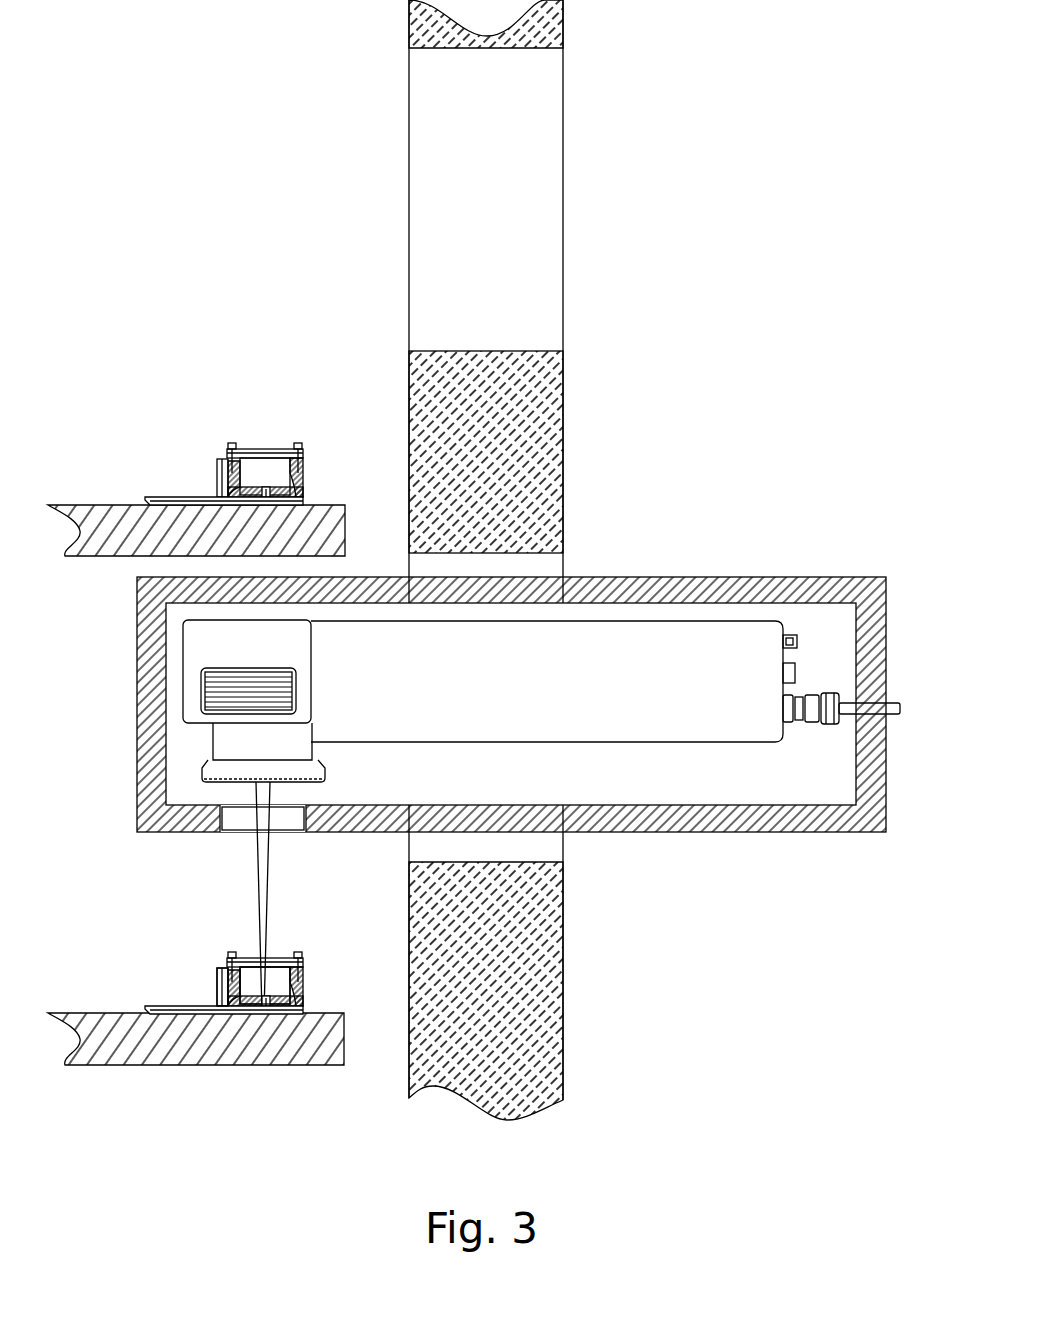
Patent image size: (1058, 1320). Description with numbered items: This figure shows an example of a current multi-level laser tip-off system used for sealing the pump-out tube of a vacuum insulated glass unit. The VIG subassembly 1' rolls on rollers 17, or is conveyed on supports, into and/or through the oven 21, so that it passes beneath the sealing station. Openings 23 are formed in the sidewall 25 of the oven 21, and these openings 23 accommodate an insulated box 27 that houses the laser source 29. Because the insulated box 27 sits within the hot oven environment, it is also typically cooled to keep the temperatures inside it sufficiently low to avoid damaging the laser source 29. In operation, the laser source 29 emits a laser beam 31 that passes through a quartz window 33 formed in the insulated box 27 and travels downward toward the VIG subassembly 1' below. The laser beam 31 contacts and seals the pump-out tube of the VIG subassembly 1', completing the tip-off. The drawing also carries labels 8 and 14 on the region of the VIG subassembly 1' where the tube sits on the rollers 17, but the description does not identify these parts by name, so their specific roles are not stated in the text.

The VIG subassembly 1' is at (260, 970).
The sensor housing 8 is at (263, 1008).
The mounting bracket 14 is at (228, 980).
The rollers 17 is at (306, 1052).
The oven 21 is at (162, 118).
The openings 23 is at (532, 228).
The sidewall 25 is at (532, 408).
The insulated box 27 is at (494, 685).
The laser source 29 is at (571, 709).
The laser beam 31 is at (260, 890).
The quartz window 33 is at (235, 810).